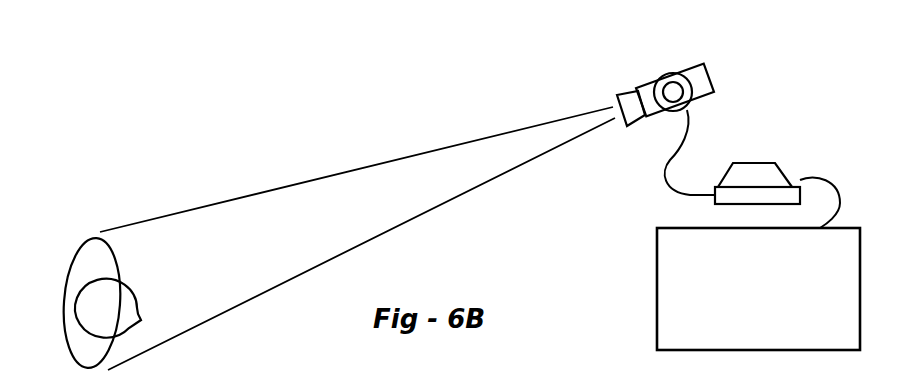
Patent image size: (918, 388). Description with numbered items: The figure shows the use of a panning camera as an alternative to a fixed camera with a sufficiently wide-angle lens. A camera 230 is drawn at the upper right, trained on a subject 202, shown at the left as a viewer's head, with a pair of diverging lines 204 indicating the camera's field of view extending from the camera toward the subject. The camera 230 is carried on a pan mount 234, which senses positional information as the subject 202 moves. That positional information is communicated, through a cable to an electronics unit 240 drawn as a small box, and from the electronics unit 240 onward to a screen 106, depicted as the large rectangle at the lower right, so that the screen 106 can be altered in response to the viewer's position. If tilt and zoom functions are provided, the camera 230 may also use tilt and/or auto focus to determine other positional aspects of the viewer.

The user / face 202 is at (79, 303).
The field of view 204 is at (357, 238).
The camera 230 is at (642, 87).
The pan mount 234 is at (678, 82).
The electronics unit 240 is at (777, 182).
The screen 106 is at (758, 289).